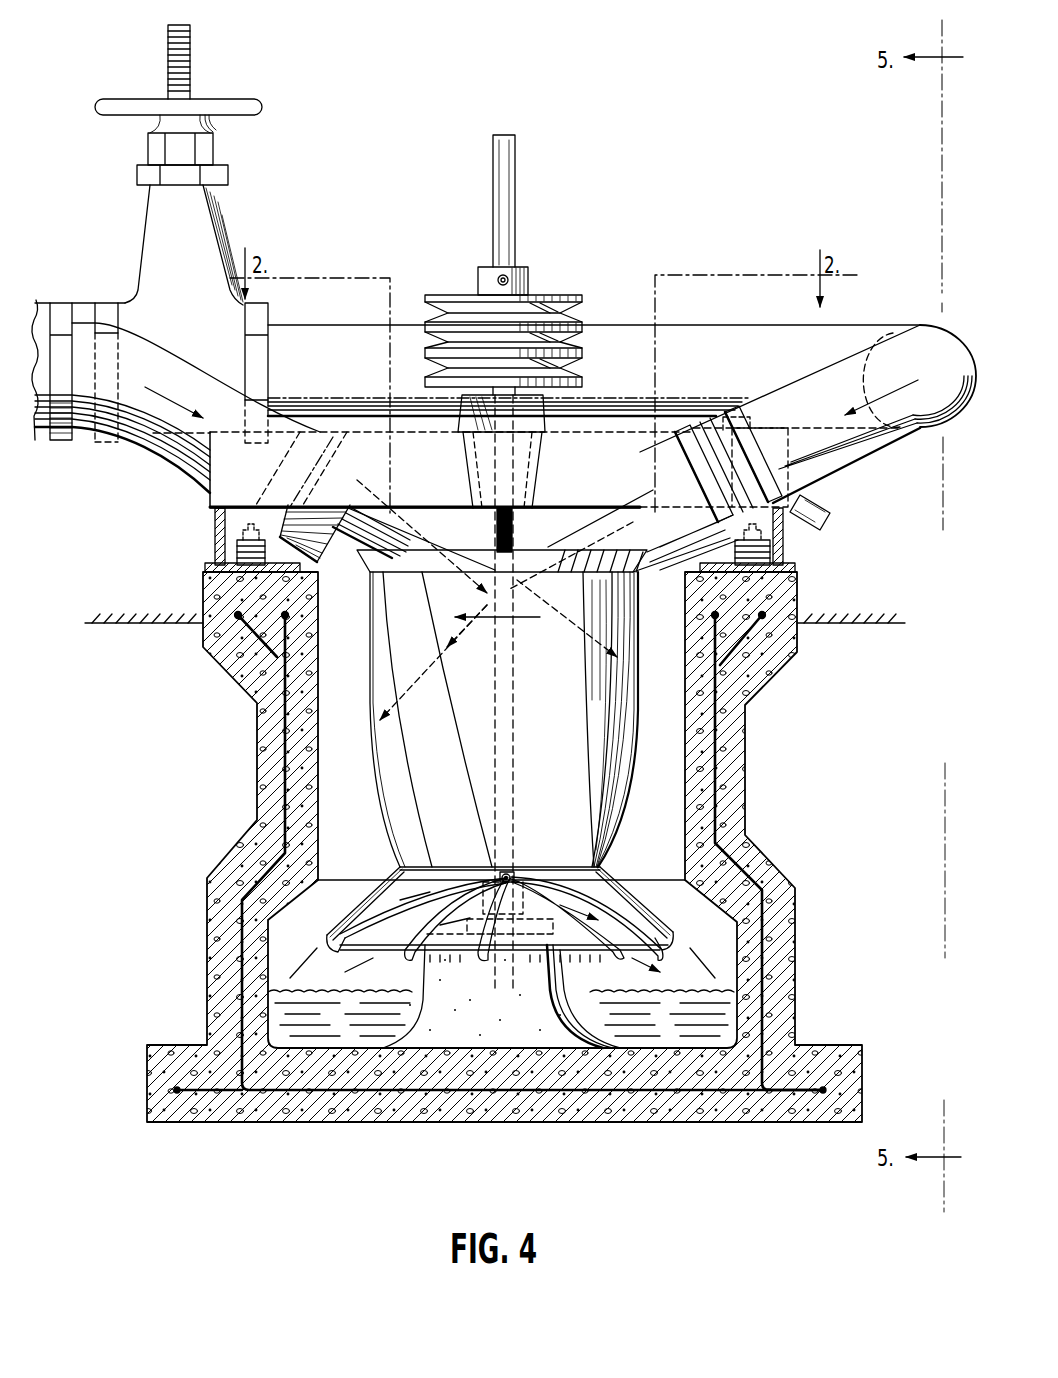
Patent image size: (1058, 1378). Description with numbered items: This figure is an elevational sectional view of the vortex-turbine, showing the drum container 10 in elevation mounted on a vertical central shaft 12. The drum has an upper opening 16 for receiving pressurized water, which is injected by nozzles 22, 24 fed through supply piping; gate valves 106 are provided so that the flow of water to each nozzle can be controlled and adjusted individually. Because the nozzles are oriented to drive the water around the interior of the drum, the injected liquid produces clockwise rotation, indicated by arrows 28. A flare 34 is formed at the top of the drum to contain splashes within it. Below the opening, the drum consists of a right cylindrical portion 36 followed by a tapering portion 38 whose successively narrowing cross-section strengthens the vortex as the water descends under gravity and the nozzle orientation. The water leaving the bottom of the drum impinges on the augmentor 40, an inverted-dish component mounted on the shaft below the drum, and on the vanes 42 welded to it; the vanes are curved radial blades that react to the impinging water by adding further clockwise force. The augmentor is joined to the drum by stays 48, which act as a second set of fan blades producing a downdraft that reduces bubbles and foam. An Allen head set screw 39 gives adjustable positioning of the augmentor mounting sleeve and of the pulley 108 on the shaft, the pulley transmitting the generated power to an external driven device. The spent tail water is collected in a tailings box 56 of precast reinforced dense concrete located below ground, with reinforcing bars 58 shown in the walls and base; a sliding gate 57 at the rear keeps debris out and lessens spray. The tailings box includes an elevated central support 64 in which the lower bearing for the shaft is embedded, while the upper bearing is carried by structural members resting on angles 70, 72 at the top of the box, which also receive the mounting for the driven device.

The drum container 10 is at (644, 623).
The central shaft 12 is at (503, 524).
The upper opening 16 is at (370, 575).
The nozzle 22 is at (398, 523).
The nozzle 24 is at (637, 500).
The arrows 28 is at (475, 612).
The flare 34 is at (360, 551).
The right cylindrical portion 36 is at (636, 672).
The tapering portion 38 is at (607, 810).
The Allen head set screw 39 is at (510, 278).
The augmentor 40 is at (502, 904).
The vanes 42 is at (357, 920).
The stays 48 is at (360, 900).
The tailings box 56 is at (237, 677).
The sliding gate 57 is at (668, 750).
The reinforcing bars 58 is at (283, 742).
The central support 64 is at (433, 967).
The angle 70 is at (213, 542).
The angle 72 is at (784, 548).
The gate valve 106 is at (240, 108).
The pulley 108 is at (455, 297).